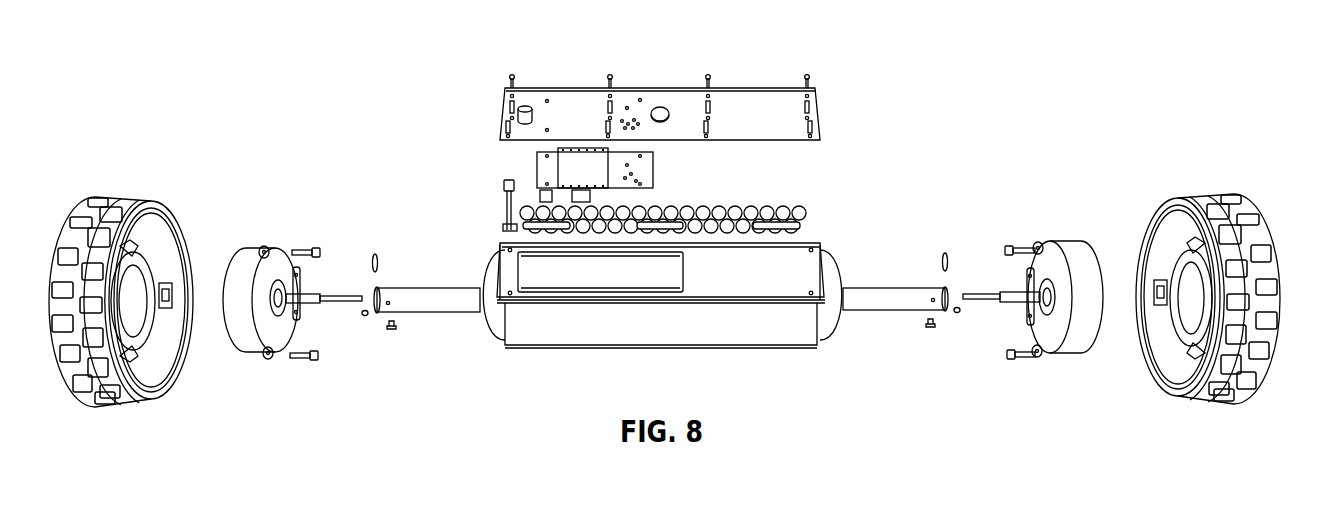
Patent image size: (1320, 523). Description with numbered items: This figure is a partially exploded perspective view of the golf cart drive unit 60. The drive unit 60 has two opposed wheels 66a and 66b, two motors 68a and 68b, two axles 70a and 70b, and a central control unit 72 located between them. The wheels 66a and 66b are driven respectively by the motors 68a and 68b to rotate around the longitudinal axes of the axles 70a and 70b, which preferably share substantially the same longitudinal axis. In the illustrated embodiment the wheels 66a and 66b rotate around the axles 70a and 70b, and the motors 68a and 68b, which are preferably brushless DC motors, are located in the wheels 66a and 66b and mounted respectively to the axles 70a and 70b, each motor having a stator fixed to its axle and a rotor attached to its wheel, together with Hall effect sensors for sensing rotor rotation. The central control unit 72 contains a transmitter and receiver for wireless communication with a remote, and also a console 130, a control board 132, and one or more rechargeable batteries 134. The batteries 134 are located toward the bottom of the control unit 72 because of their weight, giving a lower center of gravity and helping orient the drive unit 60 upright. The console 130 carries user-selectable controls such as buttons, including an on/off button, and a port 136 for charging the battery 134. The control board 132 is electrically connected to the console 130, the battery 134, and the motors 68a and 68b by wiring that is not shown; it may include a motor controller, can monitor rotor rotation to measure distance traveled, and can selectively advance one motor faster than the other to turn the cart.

The golf cart drive unit 60 is at (983, 123).
The wheel 66a is at (120, 200).
The wheel 66b is at (1218, 190).
The motor 68a is at (250, 253).
The motor 68b is at (1078, 243).
The axle 70a is at (405, 290).
The axle 70b is at (884, 293).
The central control unit 72 is at (776, 340).
The console 130 is at (760, 87).
The control board 132 is at (655, 170).
The rechargeable battery 134 is at (797, 212).
The port 136 is at (657, 100).